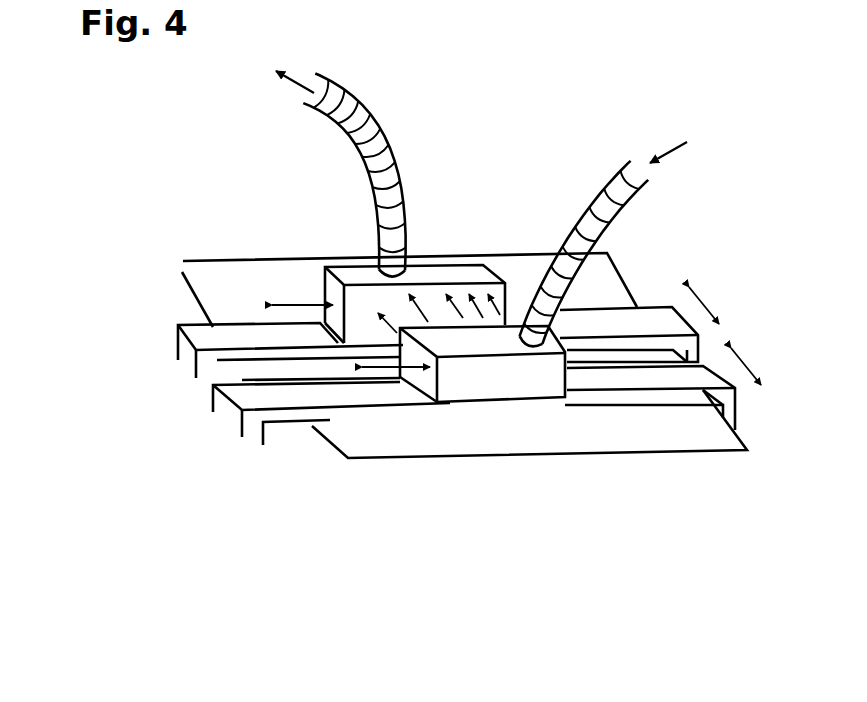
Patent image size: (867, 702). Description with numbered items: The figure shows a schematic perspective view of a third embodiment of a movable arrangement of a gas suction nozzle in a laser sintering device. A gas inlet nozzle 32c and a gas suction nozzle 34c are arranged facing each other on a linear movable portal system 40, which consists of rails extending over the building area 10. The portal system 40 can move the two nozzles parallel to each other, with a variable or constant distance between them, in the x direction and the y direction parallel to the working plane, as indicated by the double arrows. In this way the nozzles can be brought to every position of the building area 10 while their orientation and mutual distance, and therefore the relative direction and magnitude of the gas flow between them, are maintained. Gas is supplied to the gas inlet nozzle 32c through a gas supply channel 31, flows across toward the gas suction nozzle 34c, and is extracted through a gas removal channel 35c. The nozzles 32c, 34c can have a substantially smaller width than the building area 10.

The building area 10 is at (240, 262).
The linear movable portal system 40 is at (253, 398).
The gas suction nozzle 34c is at (453, 272).
The gas inlet nozzle 32c is at (510, 372).
The gas removal channel 35c is at (368, 110).
The gas supply channel 31 is at (603, 208).